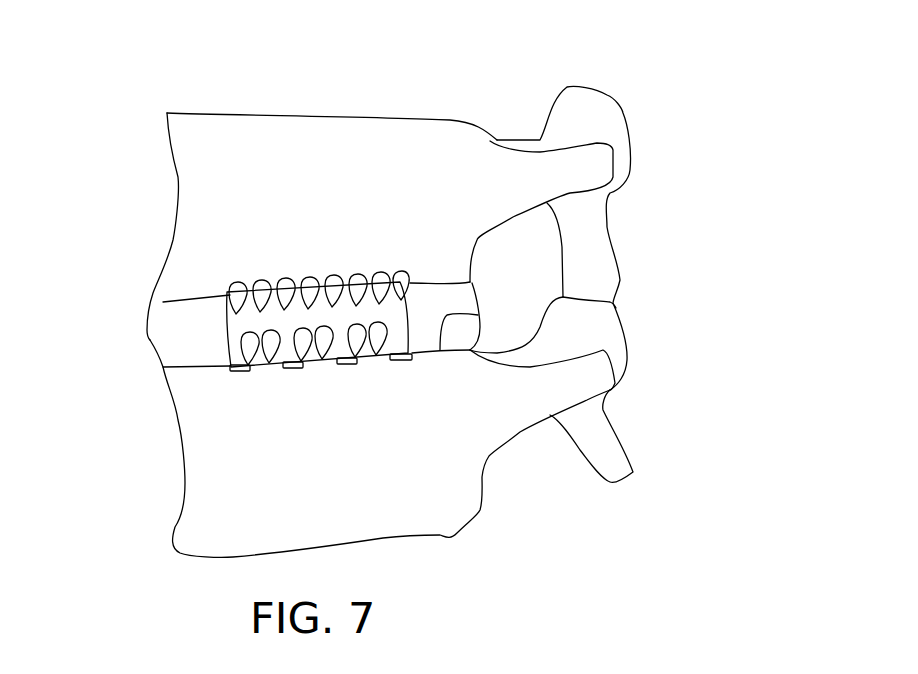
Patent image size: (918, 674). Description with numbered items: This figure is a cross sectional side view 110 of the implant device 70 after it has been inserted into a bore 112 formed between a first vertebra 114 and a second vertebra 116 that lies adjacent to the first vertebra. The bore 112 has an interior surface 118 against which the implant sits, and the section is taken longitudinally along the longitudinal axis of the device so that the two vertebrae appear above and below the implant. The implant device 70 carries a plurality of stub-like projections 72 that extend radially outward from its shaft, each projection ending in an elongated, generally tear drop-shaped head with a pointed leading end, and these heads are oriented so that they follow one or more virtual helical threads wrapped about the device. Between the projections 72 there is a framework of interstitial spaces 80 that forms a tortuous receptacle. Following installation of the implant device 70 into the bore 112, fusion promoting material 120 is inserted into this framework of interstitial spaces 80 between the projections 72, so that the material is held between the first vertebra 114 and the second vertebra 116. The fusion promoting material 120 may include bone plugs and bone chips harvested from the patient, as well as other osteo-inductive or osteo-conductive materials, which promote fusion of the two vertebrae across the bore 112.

The implant device 70 is at (257, 324).
The stub-like projections 72 is at (412, 293).
The framework of interstitial spaces 80 is at (282, 350).
The cross sectional side view 110 is at (643, 72).
The bore 112 is at (177, 320).
The first vertebra 114 is at (343, 170).
The second vertebra 116 is at (353, 520).
The interior surface 118 is at (478, 315).
The fusion promoting material 120 is at (248, 300).